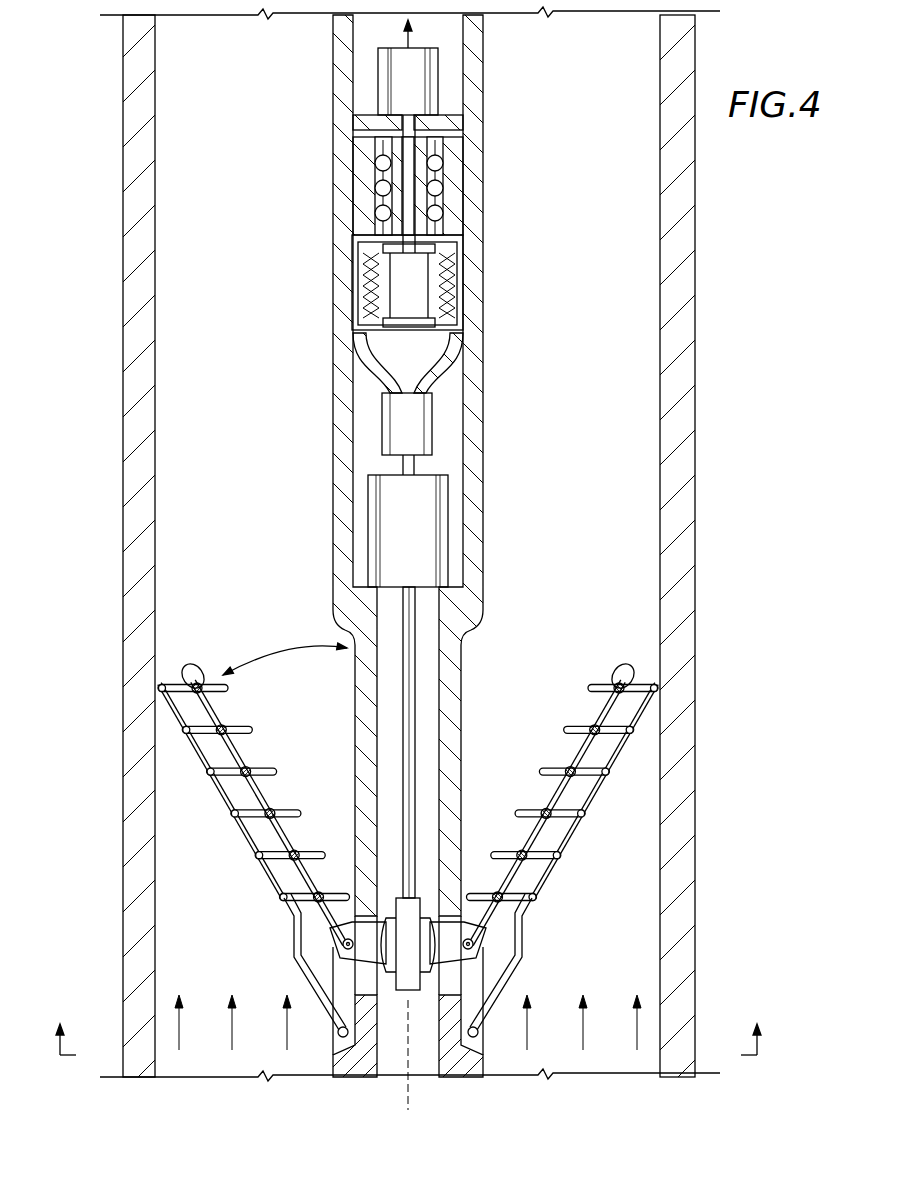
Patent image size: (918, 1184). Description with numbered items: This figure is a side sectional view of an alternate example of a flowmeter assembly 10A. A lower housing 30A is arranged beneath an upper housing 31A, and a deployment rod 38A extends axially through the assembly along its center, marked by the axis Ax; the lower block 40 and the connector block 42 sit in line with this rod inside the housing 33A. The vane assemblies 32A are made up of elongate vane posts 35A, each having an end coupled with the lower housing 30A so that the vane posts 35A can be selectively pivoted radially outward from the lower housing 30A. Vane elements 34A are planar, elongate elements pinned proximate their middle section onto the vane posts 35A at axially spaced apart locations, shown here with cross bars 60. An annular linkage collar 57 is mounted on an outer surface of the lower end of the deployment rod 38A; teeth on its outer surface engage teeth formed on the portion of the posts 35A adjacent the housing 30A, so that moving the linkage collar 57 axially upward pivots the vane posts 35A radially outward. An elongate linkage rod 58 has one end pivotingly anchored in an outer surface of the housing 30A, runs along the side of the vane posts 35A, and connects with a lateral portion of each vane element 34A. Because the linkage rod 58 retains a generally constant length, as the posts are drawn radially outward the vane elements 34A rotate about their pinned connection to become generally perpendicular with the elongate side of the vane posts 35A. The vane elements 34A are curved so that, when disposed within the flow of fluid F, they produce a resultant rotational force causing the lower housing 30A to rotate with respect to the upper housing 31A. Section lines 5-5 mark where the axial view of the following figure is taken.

The flowmeter assembly 10A is at (232, 447).
The lower housing 30A is at (485, 292).
The upper housing 31A is at (485, 91).
The vane assembly 32A is at (603, 807).
The central housing 33A is at (476, 650).
The vane element 34A is at (163, 673).
The vane post 35A is at (628, 677).
The deployment rod 38A is at (416, 720).
The lower block 40 is at (436, 528).
The connector block 42 is at (432, 413).
The linkage collar 57 is at (405, 938).
The linkage rod 58 is at (478, 958).
The cross bar 60 is at (278, 768).
The flow of fluid F is at (223, 1012).
The axis Ax is at (425, 1107).
The section lines 5- 5 is at (407, 1029).